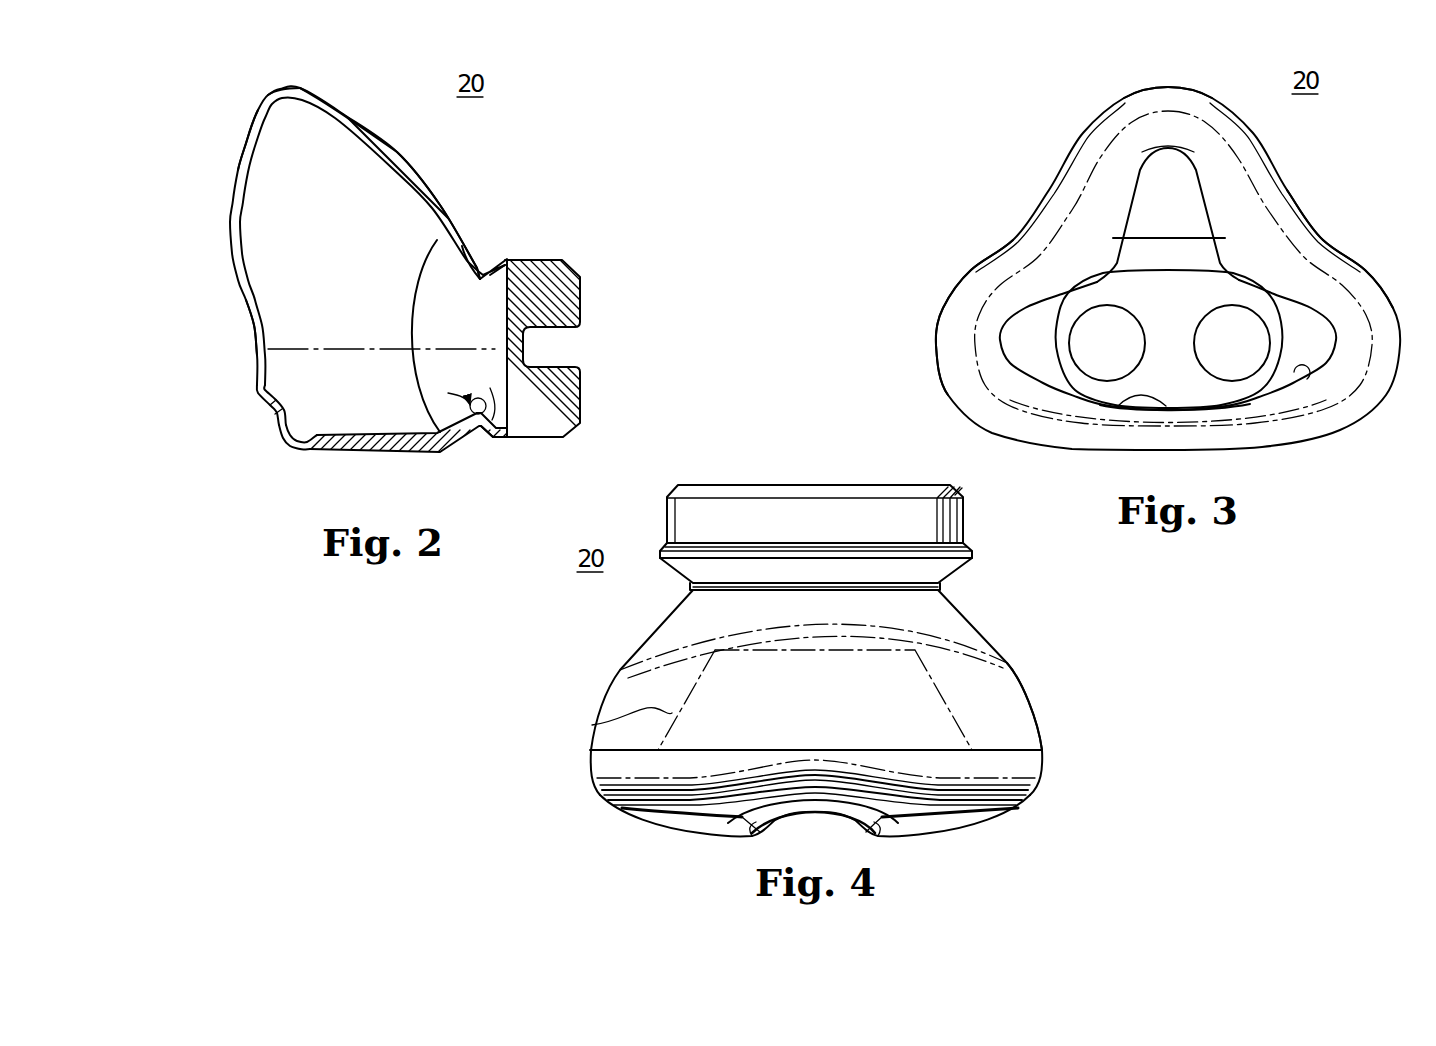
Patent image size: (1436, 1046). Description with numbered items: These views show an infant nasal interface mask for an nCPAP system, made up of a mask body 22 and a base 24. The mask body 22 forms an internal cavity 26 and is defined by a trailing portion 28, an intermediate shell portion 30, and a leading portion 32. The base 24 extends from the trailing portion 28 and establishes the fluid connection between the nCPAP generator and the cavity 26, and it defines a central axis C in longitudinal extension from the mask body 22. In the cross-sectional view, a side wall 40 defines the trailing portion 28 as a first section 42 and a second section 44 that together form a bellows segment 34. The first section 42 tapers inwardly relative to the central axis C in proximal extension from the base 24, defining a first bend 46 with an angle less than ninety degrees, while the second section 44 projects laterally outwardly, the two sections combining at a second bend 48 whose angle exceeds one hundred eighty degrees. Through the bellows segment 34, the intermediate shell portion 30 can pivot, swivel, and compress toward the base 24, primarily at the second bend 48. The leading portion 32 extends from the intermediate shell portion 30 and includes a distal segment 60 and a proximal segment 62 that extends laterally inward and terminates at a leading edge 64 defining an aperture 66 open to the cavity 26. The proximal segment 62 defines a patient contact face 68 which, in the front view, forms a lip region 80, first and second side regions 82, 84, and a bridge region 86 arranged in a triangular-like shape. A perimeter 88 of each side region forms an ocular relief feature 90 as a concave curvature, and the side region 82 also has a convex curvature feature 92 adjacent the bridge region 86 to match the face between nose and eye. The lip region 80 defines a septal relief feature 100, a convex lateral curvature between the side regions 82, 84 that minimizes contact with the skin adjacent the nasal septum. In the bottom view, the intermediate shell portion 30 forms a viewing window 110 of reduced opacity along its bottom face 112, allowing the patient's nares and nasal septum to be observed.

In FIG. 2, the mask body 22 is at (357, 86).
In FIG. 3, the mask body 22 is at (1280, 154).
In FIG. 4, the mask body 22 is at (992, 612).
In FIG. 2, the base 24 is at (565, 258).
In FIG. 2, the internal cavity 26 is at (382, 423).
In FIG. 3, the internal cavity 26 is at (1310, 337).
In FIG. 2, the trailing portion 28 is at (480, 440).
In FIG. 2, the intermediate shell portion 30 is at (346, 458).
In FIG. 4, the intermediate shell portion 30 is at (610, 672).
In FIG. 2, the leading portion 32 is at (280, 455).
In FIG. 3, the leading portion 32 is at (940, 380).
In FIG. 2, the bellows segment 34 is at (498, 440).
In FIG. 2, the side wall 40 is at (400, 156).
In FIG. 2, the first section 42 is at (496, 258).
In FIG. 2, the second section 44 is at (460, 250).
In FIG. 2, the first bend 46 is at (507, 260).
In FIG. 2, the second bend 48 is at (480, 262).
In FIG. 2, the distal segment 60 is at (293, 88).
In FIG. 3, the distal segment 60 is at (1318, 216).
In FIG. 2, the proximal segment 62 is at (255, 120).
In FIG. 3, the proximal segment 62 is at (1262, 270).
In FIG. 2, the leading edge 64 is at (255, 397).
In FIG. 3, the leading edge 64 is at (1255, 414).
In FIG. 2, the aperture 66 is at (255, 333).
In FIG. 3, the aperture 66 is at (1303, 380).
In FIG. 2, the patient contact face 68 is at (232, 150).
In FIG. 3, the patient contact face 68 is at (1053, 226).
In FIG. 3, the lip region 80 is at (1177, 428).
In FIG. 2, the first side region 82 is at (222, 258).
In FIG. 3, the first side region 82 is at (988, 290).
In FIG. 3, the second side region 84 is at (1357, 270).
In FIG. 3, the bridge region 86 is at (1176, 108).
In FIG. 3, the perimeter 88 is at (982, 268).
In FIG. 3, the ocular relief feature 90 is at (1056, 183).
In FIG. 2, the convex curvature feature 92 is at (238, 195).
In FIG. 3, the septal relief feature 100 is at (1135, 397).
In FIG. 4, the viewing window 110 is at (600, 722).
In FIG. 4, the bottom face 112 is at (1004, 700).
In FIG. 2, the central axis C is at (333, 349).